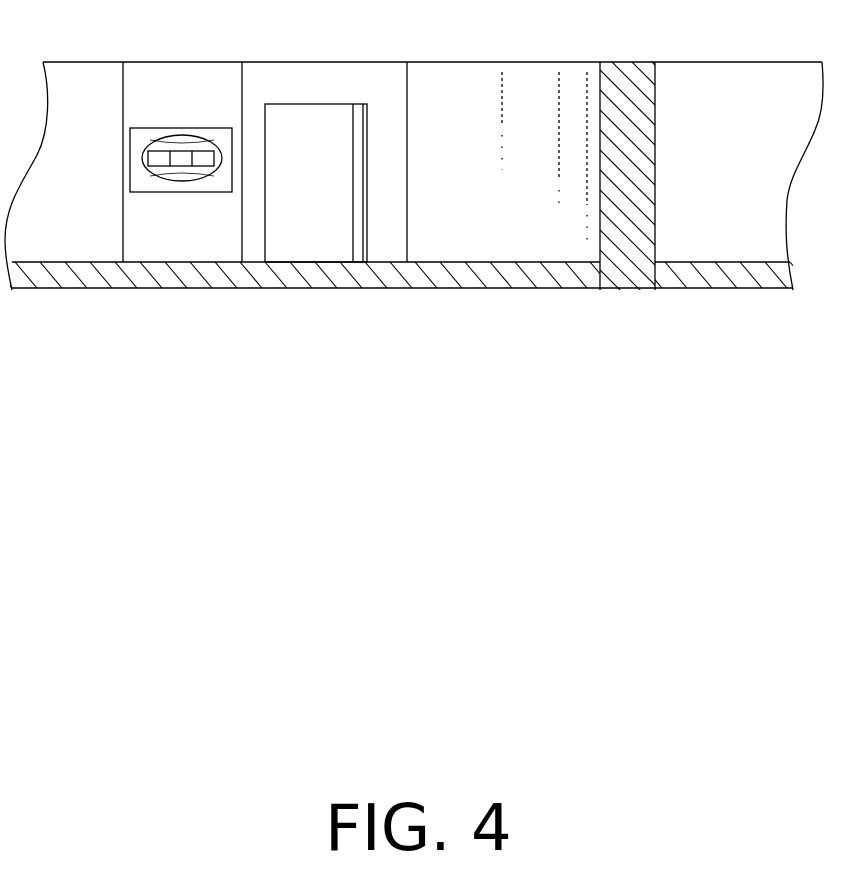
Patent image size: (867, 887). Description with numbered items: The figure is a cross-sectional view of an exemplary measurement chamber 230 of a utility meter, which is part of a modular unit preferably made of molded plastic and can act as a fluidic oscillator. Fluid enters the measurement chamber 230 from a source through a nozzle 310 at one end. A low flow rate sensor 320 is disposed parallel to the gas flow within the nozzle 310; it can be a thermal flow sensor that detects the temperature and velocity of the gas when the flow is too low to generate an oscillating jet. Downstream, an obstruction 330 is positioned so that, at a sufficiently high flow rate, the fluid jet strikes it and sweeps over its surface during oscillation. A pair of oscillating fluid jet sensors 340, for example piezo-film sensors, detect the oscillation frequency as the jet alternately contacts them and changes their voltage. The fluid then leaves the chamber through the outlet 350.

The measurement chamber 230 is at (150, 277).
The nozzle 310 is at (180, 80).
The low flow rate sensor 320 is at (140, 143).
The obstruction 330 is at (530, 93).
The oscillating fluid jet sensors 340 is at (315, 128).
The outlet 350 is at (767, 93).